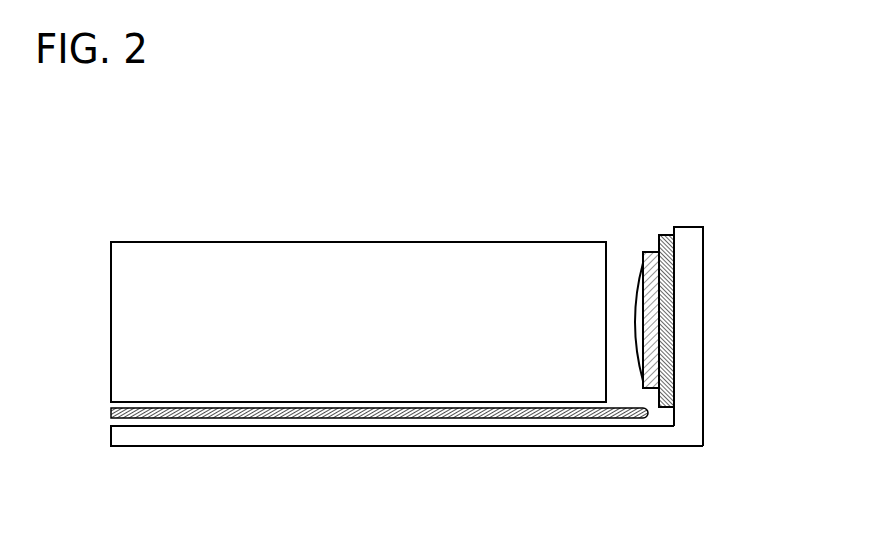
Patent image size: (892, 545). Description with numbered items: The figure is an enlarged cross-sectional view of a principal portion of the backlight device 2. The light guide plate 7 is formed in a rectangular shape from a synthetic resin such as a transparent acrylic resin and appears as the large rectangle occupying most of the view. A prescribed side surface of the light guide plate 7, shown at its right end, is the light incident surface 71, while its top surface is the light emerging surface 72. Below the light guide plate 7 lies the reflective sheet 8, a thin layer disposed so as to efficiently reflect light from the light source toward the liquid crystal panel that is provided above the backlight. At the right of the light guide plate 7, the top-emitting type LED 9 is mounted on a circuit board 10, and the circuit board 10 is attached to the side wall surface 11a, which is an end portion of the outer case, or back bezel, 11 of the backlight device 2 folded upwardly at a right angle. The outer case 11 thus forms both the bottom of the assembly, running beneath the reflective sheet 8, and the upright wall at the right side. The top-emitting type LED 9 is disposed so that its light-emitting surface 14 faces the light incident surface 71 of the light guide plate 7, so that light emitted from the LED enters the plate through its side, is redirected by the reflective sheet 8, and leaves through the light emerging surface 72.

The backlight device 2 is at (381, 214).
The light guide plate 7 is at (131, 287).
The light incident surface 71 is at (605, 284).
The light emerging surface 72 is at (397, 243).
The reflective sheet 8 is at (110, 405).
The top-emitting type LED 9 is at (641, 243).
The light-emitting surface 14 is at (633, 275).
The circuit board 10 is at (672, 228).
The outer case (back bezel) 11 is at (455, 444).
The side wall surface 11a is at (690, 340).